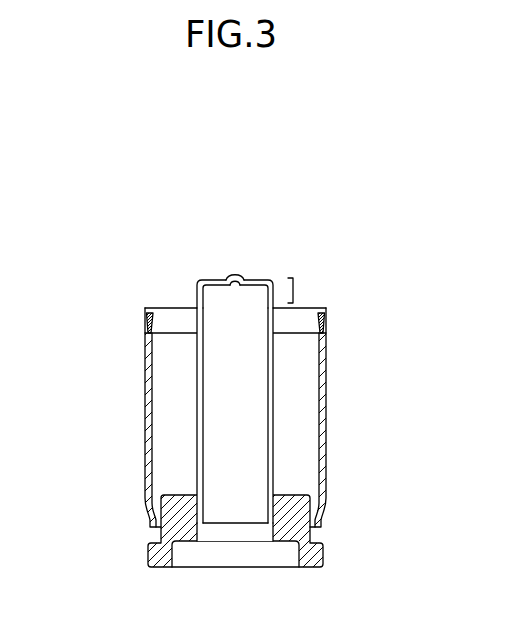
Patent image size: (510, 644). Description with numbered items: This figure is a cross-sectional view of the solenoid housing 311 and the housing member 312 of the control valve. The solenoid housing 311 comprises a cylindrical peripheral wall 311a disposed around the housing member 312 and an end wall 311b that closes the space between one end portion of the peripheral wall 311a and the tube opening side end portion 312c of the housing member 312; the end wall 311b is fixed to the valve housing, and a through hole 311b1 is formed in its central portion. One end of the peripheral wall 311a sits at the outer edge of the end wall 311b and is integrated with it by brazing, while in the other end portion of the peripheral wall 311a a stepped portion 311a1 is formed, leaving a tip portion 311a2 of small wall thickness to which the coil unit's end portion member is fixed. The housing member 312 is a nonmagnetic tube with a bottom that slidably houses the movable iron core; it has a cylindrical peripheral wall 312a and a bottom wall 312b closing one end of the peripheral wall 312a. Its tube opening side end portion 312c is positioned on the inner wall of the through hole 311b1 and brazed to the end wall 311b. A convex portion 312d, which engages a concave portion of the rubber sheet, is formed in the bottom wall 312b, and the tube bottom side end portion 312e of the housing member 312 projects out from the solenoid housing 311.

The solenoid housing 311 is at (360, 413).
The cylindrical peripheral wall 311a is at (147, 428).
The stepped portion 311a1 is at (147, 321).
The tip portion 311a2 is at (145, 308).
The end wall 311b is at (150, 550).
The through hole 311b1 is at (255, 541).
The housing member 312 is at (280, 266).
The cylindrical peripheral wall 312a is at (270, 381).
The bottom wall 312b is at (206, 281).
The tube opening side end portion 312c is at (203, 523).
The convex portion 312d is at (236, 277).
The tube bottom side end portion 312e is at (293, 290).